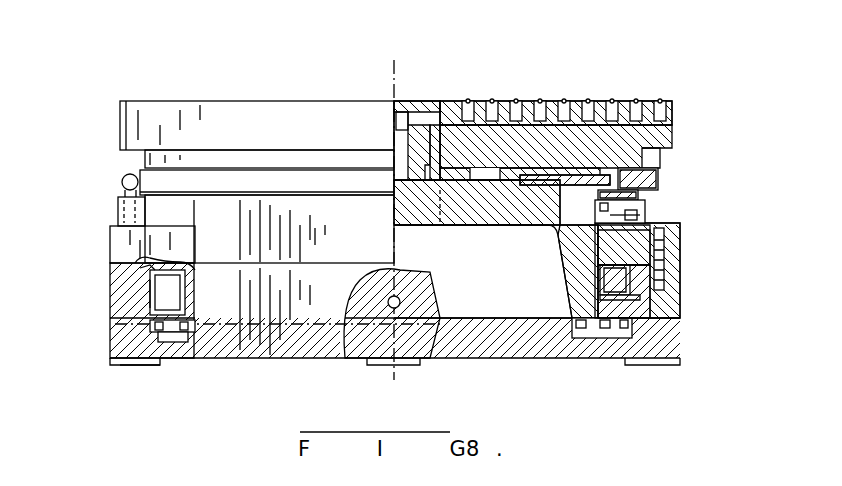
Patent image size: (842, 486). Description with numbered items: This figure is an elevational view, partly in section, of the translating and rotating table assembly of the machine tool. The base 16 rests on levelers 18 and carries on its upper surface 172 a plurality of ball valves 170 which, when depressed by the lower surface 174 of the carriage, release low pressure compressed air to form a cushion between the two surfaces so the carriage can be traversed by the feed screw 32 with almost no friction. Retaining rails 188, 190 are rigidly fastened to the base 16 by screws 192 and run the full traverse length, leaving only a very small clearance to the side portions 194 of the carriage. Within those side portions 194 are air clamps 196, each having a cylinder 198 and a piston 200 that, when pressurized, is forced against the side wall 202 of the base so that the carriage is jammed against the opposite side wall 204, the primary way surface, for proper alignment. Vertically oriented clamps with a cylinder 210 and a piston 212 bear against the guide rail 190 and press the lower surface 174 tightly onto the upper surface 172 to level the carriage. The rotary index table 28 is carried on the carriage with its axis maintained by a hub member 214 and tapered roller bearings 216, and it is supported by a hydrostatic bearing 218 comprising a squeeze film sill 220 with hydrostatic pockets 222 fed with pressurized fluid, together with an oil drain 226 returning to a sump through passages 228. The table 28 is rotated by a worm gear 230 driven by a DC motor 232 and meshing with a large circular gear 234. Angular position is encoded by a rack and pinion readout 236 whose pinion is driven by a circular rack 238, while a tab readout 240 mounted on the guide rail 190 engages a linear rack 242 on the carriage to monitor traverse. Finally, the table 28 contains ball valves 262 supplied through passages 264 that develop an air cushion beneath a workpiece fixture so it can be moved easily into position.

The base 16 is at (125, 348).
The levelers 18 is at (380, 365).
The rotary index table 28 is at (120, 108).
The feed screw 32 is at (400, 302).
The ball valves 170 is at (140, 358).
The upper surface 172 is at (565, 300).
The lower surface 174 is at (610, 340).
The retaining rail 188 is at (110, 246).
The retaining rail 190 is at (680, 232).
The screws 192 is at (672, 250).
The side portions 194 is at (150, 272).
The air clamps 196 is at (172, 262).
The cylinder 198 is at (183, 290).
The piston 200 is at (160, 336).
The side wall 202 is at (150, 318).
The opposite side wall 204 is at (655, 300).
The cylinder 210 is at (600, 298).
The piston 212 is at (604, 276).
The hub member 214 is at (415, 118).
The tapered roller bearings 216 is at (445, 100).
The hydrostatic bearing 218 is at (585, 128).
The squeeze film sill 220 is at (535, 172).
The hydrostatic pockets 222 is at (502, 168).
The oil drain 226 is at (447, 190).
The passages 228 is at (478, 225).
The worm gear 230 is at (128, 176).
The DC motor 232 is at (118, 212).
The circular gear 234 is at (658, 174).
The rack and pinion readout 236 is at (660, 153).
The circular rack 238 is at (632, 148).
The tab readout 240 is at (648, 212).
The linear rack 242 is at (640, 196).
The ball valves 262 is at (490, 98).
The passages 264 is at (588, 110).